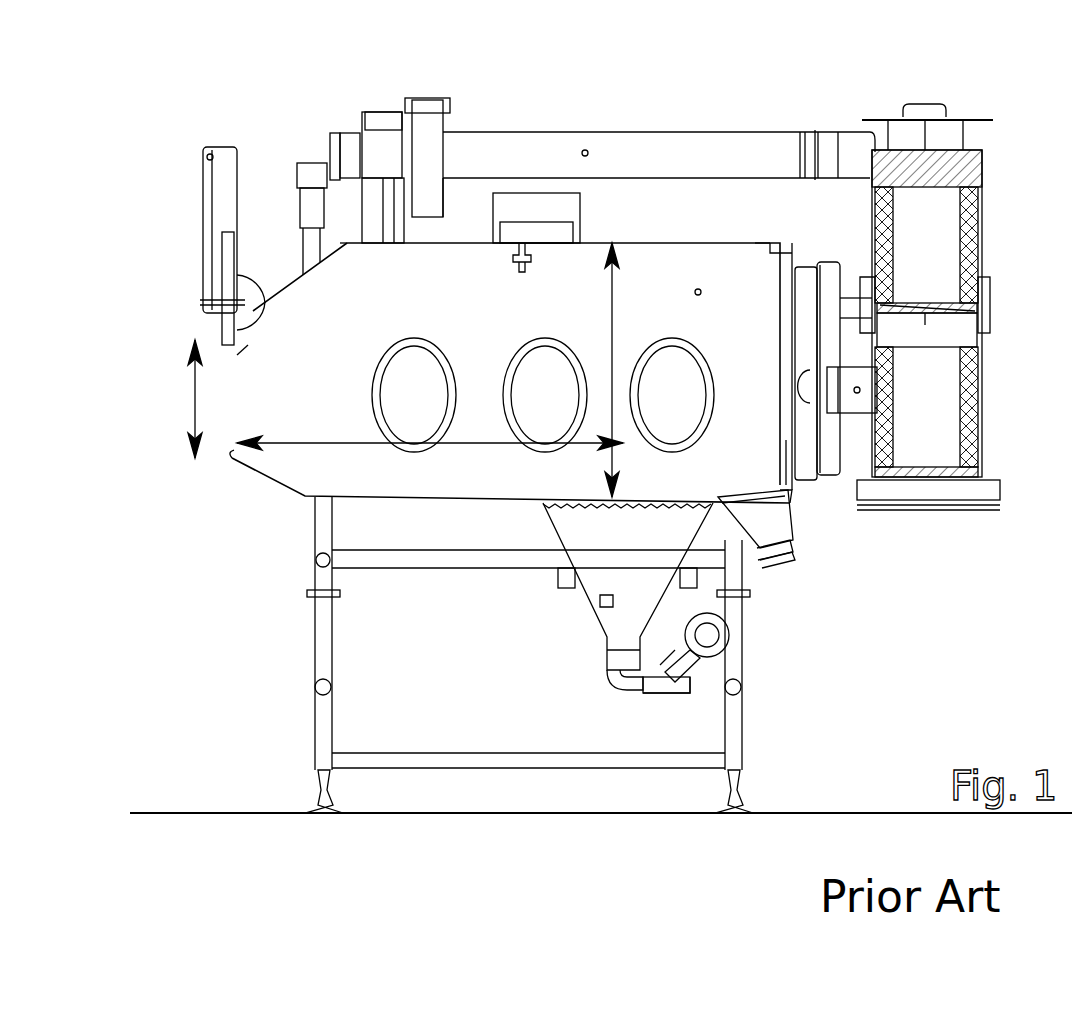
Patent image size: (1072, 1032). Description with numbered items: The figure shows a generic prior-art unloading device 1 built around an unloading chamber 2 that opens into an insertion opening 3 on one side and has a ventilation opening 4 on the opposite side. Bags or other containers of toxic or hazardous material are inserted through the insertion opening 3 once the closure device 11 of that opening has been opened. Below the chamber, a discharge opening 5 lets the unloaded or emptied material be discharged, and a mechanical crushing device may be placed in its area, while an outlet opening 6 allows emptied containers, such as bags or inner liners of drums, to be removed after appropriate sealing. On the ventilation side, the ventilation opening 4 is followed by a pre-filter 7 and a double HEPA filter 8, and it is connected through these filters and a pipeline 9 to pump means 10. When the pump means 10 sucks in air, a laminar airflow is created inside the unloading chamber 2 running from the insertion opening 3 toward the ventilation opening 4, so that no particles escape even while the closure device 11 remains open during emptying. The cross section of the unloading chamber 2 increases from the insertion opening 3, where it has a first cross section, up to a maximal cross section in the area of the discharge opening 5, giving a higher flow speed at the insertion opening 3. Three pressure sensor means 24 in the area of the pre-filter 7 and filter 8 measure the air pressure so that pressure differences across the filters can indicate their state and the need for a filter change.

The unloading device 1 is at (838, 545).
The unloading chamber 2 is at (633, 284).
The insertion opening 3 is at (238, 400).
The ventilation opening 4 is at (797, 297).
The discharge opening 5 is at (590, 548).
The outlet opening 6 is at (778, 557).
The pre-filter 7 is at (798, 408).
The double HEPA filter 8 is at (920, 392).
The pipeline 9 is at (650, 163).
The pump means 10 is at (428, 197).
The closure device 11 is at (300, 273).
The pressure sensor means 24 is at (843, 158).